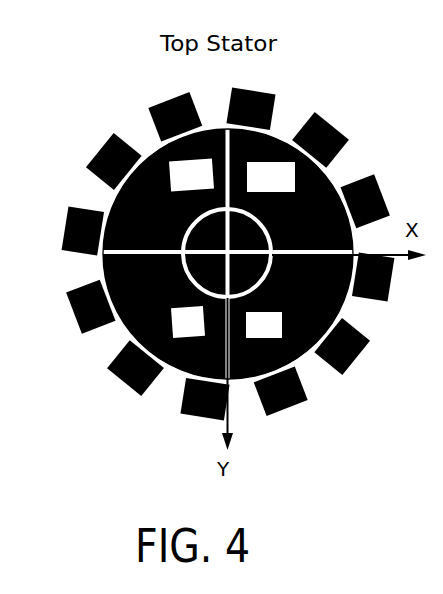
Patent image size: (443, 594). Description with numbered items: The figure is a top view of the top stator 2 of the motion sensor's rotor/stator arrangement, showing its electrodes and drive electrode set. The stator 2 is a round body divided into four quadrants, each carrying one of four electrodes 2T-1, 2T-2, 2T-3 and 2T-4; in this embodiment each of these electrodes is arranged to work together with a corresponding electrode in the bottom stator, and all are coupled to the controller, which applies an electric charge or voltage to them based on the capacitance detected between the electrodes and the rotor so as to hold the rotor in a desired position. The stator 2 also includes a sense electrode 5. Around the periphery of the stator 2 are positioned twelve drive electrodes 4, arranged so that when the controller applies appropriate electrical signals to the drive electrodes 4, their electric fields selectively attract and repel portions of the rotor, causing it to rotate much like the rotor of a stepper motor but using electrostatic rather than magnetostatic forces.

The stator 2 is at (273, 254).
The electrode 2T-1 is at (262, 176).
The electrode 2T-2 is at (150, 155).
The electrode 2T-3 is at (118, 316).
The electrode 2T-4 is at (312, 333).
The drive electrode 4 is at (326, 134).
The sense electrode 5 is at (350, 298).